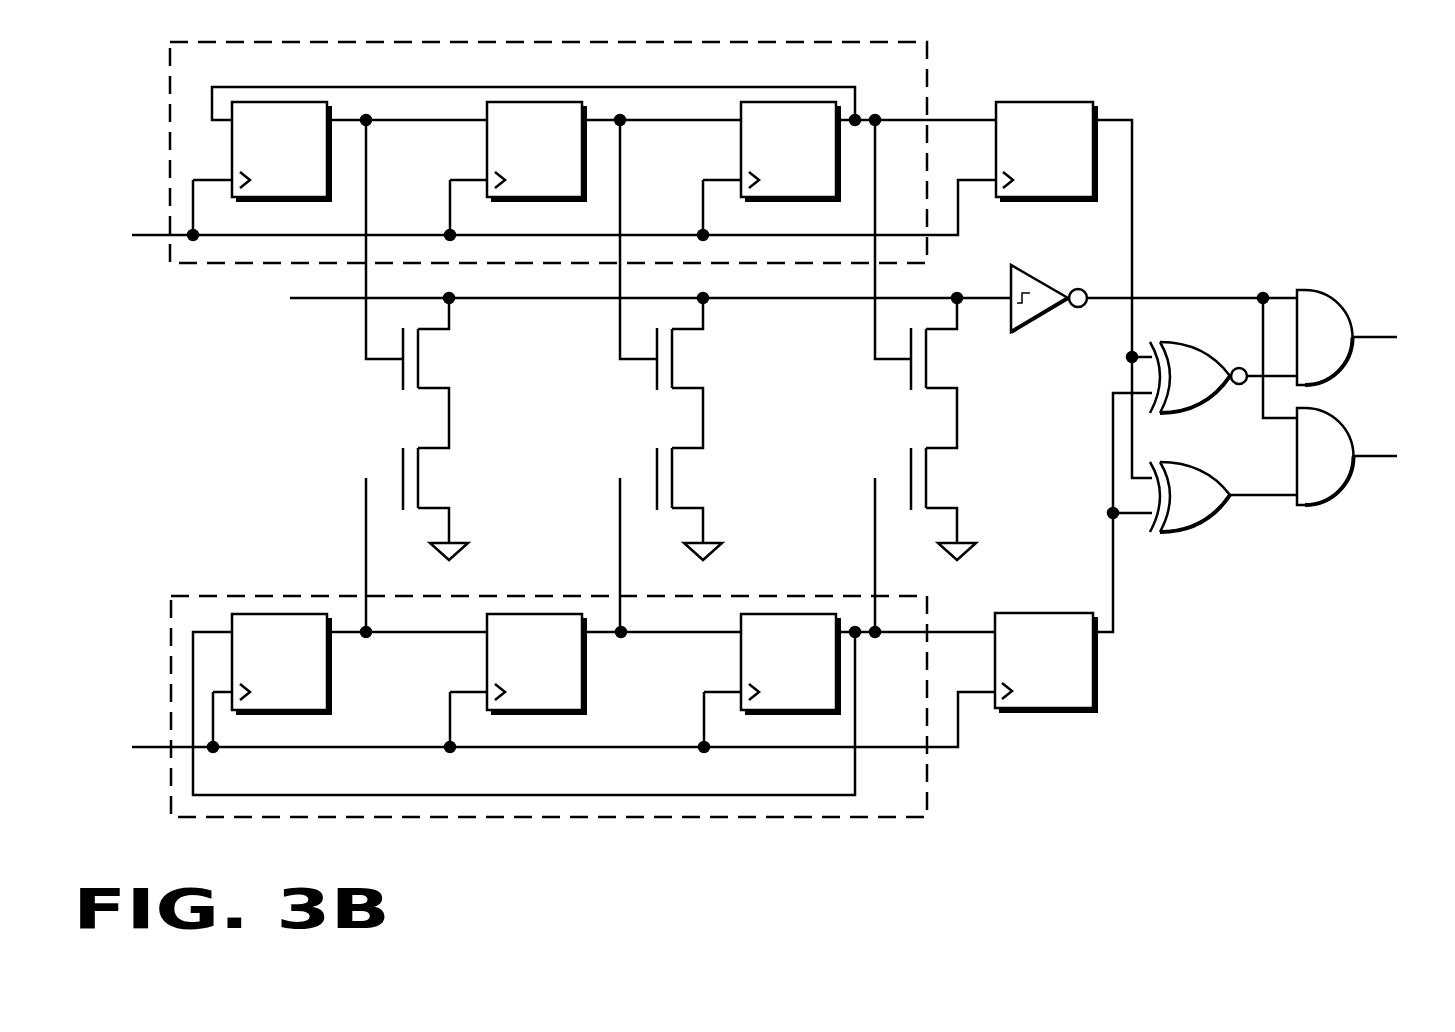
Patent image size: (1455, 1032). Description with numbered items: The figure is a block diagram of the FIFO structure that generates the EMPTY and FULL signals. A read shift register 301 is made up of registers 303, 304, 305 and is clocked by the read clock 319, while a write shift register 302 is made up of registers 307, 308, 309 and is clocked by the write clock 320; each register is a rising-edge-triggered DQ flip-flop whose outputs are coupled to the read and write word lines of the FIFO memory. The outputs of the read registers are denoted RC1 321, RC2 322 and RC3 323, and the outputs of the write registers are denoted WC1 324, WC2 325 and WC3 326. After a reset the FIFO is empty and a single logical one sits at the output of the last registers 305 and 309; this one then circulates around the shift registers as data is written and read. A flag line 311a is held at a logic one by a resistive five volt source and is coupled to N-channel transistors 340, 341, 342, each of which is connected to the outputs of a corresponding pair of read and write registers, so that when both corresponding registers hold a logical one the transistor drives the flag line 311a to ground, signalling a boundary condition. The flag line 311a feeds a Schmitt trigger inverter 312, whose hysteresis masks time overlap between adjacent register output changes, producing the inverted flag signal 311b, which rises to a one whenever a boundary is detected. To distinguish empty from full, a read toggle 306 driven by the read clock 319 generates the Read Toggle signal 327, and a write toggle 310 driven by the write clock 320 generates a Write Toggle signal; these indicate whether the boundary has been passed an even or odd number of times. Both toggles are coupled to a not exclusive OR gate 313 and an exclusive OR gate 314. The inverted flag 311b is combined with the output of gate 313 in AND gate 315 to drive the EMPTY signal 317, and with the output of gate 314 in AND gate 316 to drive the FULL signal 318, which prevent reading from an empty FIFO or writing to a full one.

The read shift register 301 is at (548, 152).
The write shift register 302 is at (549, 706).
The register 303 is at (281, 151).
The register 304 is at (536, 151).
The register 305 is at (790, 151).
The read toggle 306 is at (1046, 151).
The register 307 is at (281, 663).
The register 308 is at (536, 663).
The register 309 is at (790, 663).
The write toggle 310 is at (1045, 662).
The flag line 311a is at (322, 304).
The inverted flag signal 311b is at (1172, 297).
The Schmitt trigger inverter 312 is at (1041, 281).
The not exclusive OR gate 313 is at (1223, 377).
The exclusive OR gate 314 is at (1223, 497).
The AND gate 315 is at (1325, 337).
The AND gate 316 is at (1325, 456).
The EMPTY signal 317 is at (1373, 334).
The FULL signal 318 is at (1383, 458).
The read clock 319 is at (148, 233).
The write clock 320 is at (148, 747).
The RC1 321 is at (390, 123).
The RC2 322 is at (648, 123).
The RC3 323 is at (892, 120).
The WC1 324 is at (388, 636).
The WC2 325 is at (642, 636).
The WC3 326 is at (893, 636).
The Read Toggle (RT) signal 327 is at (1126, 659).
The N-channel transistor 340 is at (452, 416).
The N-channel transistor 341 is at (706, 416).
The N-channel transistor 342 is at (960, 416).